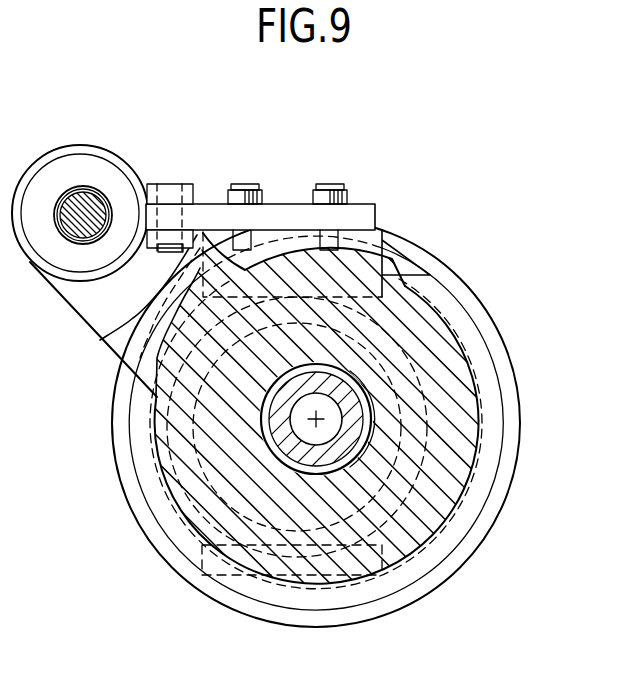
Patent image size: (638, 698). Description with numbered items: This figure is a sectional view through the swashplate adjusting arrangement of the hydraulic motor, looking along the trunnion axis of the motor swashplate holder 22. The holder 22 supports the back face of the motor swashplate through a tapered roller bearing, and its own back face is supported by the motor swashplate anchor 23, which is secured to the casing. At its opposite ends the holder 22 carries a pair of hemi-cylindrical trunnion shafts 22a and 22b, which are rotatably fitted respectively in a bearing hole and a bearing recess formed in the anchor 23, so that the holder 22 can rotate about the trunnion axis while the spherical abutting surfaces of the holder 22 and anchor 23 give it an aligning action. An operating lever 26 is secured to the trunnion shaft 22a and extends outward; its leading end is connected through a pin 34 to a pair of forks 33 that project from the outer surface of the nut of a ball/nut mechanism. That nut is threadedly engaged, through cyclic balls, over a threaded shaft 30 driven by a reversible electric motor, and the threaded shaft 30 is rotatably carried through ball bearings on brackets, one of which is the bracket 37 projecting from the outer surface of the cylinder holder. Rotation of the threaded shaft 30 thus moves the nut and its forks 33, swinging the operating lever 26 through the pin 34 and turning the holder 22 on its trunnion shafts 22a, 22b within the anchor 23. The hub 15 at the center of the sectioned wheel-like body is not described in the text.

The hub/axle 15 is at (350, 417).
The motor swashplate holder 22 is at (430, 400).
The trunnion shaft 22a is at (363, 247).
The trunnion shaft 22b is at (304, 585).
The motor swashplate anchor 23 is at (447, 345).
The operating lever 26 is at (278, 216).
The threaded shaft 30 is at (90, 202).
The forks 33 is at (166, 191).
The pin 34 is at (193, 188).
The bracket 37 is at (86, 303).